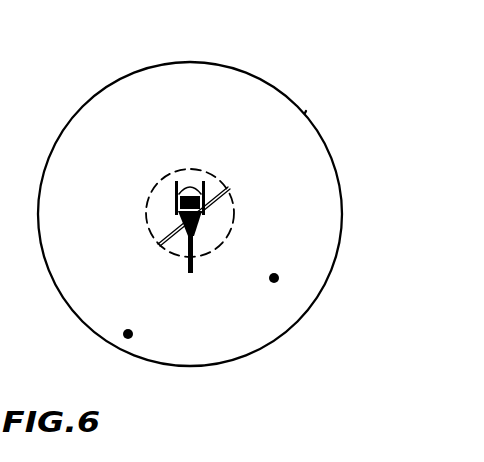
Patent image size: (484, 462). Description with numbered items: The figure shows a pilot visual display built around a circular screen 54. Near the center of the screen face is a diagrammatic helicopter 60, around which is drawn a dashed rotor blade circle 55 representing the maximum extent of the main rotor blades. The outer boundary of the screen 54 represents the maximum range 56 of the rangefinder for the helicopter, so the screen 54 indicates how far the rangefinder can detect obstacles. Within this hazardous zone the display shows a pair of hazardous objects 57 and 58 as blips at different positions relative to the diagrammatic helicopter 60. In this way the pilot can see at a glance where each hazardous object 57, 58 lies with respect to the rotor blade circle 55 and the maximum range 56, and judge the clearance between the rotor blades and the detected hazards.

The circular screen 54 is at (244, 58).
The rotor blade circle 55 is at (205, 171).
The maximum range 56 is at (305, 113).
The hazardous object 57 is at (277, 283).
The hazardous object 58 is at (132, 338).
The diagrammatic helicopter 60 is at (216, 226).